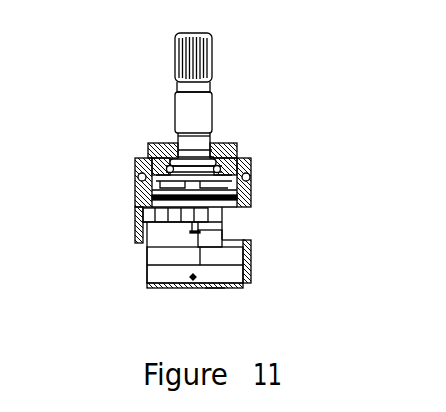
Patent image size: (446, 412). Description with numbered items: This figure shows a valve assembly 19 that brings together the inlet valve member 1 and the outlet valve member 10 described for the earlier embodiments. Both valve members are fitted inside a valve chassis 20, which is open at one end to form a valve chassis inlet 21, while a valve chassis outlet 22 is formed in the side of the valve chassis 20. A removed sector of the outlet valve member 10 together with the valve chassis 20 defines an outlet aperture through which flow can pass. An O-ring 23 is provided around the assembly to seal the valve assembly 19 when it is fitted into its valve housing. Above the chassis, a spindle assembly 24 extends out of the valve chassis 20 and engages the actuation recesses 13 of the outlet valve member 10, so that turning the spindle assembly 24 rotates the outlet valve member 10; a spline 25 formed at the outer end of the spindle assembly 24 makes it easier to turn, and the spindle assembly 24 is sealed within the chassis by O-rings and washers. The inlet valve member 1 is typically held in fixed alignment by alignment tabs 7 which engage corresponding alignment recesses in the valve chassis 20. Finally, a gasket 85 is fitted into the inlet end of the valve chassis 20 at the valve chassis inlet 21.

The spline 25 is at (212, 58).
The spindle assembly 24 is at (222, 125).
The valve assembly 19 is at (247, 133).
The O-ring 23 is at (250, 172).
The valve chassis 20 is at (252, 192).
The valve chassis outlet 22 is at (245, 218).
The actuation recesses 13 is at (190, 228).
The outlet valve member 10 is at (215, 232).
The inlet valve member 1 is at (232, 256).
The alignment tabs 7 is at (199, 240).
The gasket 85 is at (228, 275).
The valve chassis inlet 21 is at (217, 293).